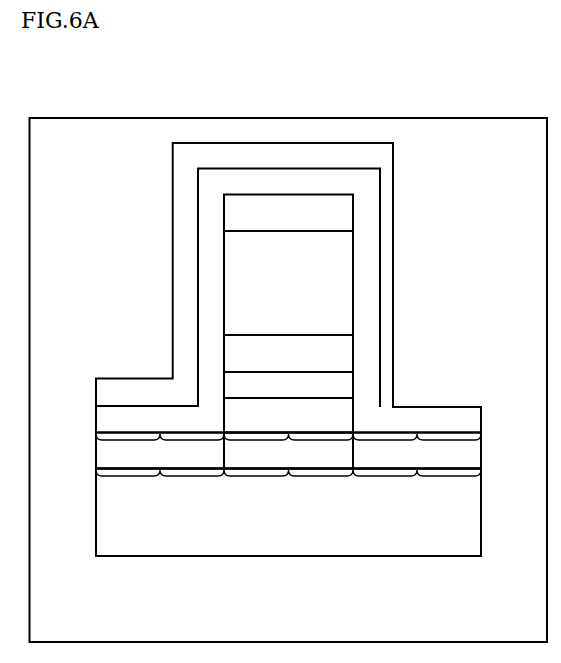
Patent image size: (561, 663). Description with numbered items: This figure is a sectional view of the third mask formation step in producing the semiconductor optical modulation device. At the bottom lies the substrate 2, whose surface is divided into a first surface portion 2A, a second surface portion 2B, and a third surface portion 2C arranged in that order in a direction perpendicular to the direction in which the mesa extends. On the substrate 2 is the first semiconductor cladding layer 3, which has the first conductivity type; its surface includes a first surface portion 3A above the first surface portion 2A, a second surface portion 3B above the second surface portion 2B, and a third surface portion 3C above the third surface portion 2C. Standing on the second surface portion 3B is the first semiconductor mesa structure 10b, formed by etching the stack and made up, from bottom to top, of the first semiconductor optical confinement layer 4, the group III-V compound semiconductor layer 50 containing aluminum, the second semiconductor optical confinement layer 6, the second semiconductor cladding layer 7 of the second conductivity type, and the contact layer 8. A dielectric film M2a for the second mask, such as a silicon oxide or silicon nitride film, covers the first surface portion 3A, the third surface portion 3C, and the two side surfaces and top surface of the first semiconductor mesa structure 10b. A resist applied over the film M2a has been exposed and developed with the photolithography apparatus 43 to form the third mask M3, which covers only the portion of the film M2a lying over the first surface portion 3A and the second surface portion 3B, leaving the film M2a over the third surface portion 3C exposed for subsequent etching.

The photolithography apparatus 43 is at (472, 118).
The third mask M3 is at (180, 243).
The film for the second mask M2a is at (213, 296).
The first semiconductor mesa structure 10b is at (366, 314).
The contact layer 8 is at (345, 213).
The second semiconductor cladding layer 7 is at (345, 285).
The second semiconductor optical confinement layer 6 is at (345, 355).
The group III-V compound semiconductor layer 50 is at (345, 385).
The first semiconductor optical confinement layer 4 is at (326, 404).
The first semiconductor cladding layer 3 is at (316, 452).
The first surface portion of the first semiconductor cladding layer 3A is at (160, 452).
The second surface portion of the first semiconductor cladding layer 3B is at (288, 452).
The third surface portion of the first semiconductor cladding layer 3C is at (417, 452).
The substrate 2 is at (316, 513).
The first surface portion of the substrate 2A is at (160, 513).
The second surface portion of the substrate 2B is at (288, 513).
The third surface portion of the substrate 2C is at (417, 513).